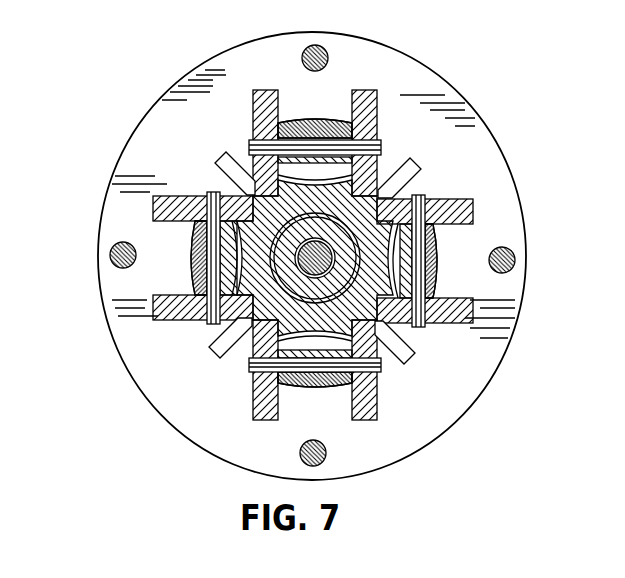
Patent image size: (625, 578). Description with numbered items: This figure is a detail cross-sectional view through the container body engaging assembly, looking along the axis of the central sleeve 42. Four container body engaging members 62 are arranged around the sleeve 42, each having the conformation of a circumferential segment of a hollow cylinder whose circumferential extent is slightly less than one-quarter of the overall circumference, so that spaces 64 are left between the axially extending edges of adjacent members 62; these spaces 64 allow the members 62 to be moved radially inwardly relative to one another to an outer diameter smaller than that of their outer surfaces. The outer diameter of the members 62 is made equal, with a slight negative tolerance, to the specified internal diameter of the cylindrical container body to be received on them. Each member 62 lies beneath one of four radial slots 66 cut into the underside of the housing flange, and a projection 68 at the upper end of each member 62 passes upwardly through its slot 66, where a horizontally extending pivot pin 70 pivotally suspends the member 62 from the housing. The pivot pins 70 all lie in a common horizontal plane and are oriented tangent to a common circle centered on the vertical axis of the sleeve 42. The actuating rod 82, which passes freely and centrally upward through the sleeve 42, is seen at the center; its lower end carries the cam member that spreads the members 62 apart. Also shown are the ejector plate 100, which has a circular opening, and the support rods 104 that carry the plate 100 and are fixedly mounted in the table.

The sleeve 42 is at (292, 227).
The container body engaging member 62 is at (307, 127).
The space 64 is at (231, 163).
The radial slot 66 is at (283, 88).
The projection 68 is at (333, 123).
The pivot pin 70 is at (206, 195).
The actuating rod 82 is at (320, 258).
The ejector plate 100 is at (463, 414).
The support rod 104 is at (325, 45).